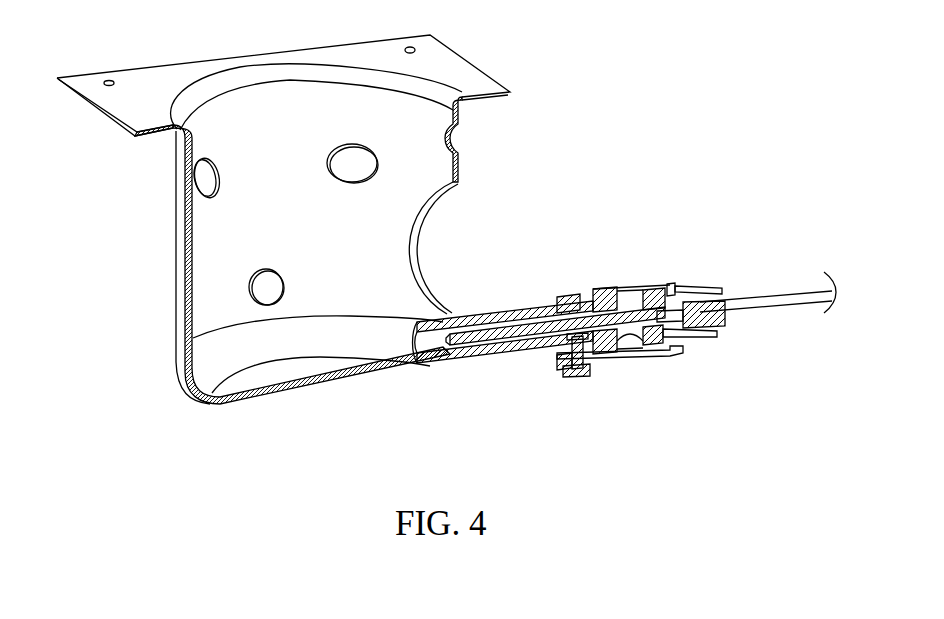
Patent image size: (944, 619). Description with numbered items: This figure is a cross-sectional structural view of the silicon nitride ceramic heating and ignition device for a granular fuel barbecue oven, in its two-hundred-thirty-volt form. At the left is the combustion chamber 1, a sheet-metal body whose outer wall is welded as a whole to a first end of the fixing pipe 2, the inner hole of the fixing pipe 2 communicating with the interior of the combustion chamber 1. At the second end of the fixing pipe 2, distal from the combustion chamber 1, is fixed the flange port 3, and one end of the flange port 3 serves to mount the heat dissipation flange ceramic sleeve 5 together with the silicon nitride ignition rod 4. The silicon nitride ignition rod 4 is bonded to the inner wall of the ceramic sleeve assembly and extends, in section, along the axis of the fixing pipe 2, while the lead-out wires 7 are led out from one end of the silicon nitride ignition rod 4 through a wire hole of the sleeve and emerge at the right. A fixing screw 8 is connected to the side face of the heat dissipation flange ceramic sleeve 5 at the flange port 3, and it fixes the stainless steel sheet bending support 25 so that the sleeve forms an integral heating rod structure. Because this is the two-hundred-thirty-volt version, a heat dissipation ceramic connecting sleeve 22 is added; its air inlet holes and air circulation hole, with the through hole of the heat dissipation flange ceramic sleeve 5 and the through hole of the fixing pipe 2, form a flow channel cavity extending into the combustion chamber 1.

The combustion chamber 1 is at (279, 378).
The fixing pipe 2 is at (483, 313).
The flange port 3 is at (565, 302).
The silicon nitride ignition rod 4 is at (497, 340).
The heat dissipation flange ceramic sleeve 5 is at (707, 337).
The lead-out wires 7 is at (757, 290).
The fixing screws 8 is at (572, 377).
The heat dissipation ceramic connecting sleeve 22 is at (600, 292).
The stainless steel sheet bending support 25 is at (641, 359).